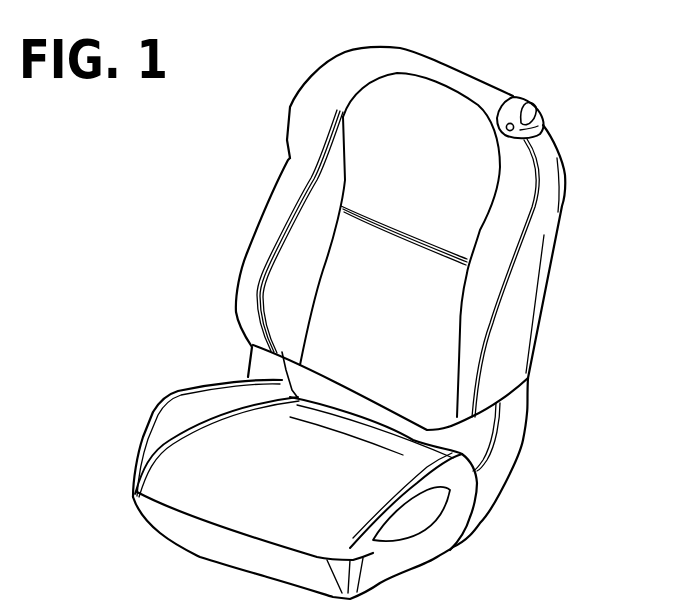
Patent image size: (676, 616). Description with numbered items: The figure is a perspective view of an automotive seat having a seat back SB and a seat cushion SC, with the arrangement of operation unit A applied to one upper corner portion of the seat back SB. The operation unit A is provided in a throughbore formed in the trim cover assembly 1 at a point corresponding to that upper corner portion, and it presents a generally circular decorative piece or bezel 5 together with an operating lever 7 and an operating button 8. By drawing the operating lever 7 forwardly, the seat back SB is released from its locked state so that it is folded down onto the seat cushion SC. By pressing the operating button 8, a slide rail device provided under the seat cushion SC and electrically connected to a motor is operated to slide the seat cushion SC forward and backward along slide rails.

The trim cover assembly 1 is at (545, 212).
The bezel 5 is at (545, 125).
The operating lever 7 is at (528, 104).
The operating button 8 is at (509, 122).
The arrangement of operation unit A is at (553, 84).
The seat back SB is at (382, 237).
The seat cushion SC is at (152, 383).